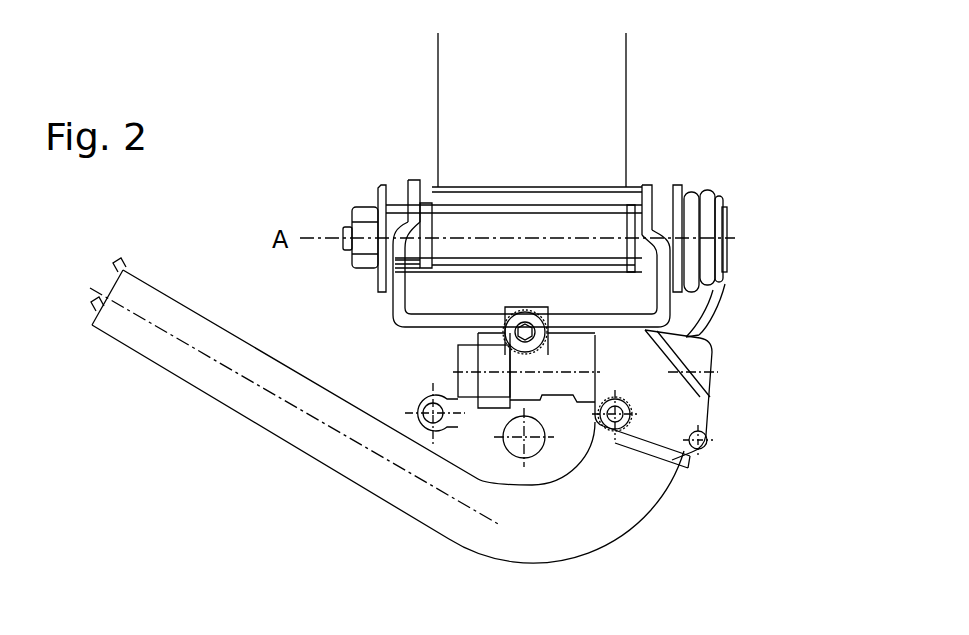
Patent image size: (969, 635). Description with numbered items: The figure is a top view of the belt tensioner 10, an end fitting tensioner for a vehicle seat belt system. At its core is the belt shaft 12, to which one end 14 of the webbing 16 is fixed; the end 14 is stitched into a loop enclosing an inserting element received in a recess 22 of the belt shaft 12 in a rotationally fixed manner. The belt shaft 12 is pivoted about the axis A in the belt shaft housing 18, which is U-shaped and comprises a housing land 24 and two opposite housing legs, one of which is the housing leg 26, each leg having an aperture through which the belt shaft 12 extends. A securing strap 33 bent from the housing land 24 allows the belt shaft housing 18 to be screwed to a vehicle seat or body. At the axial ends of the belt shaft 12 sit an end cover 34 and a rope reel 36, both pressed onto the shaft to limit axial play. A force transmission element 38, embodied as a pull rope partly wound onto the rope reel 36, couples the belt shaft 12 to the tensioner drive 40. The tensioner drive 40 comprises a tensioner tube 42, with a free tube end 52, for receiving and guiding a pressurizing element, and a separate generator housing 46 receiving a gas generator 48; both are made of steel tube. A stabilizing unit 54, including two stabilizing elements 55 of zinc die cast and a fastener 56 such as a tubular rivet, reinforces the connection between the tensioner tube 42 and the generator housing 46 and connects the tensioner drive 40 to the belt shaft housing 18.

The belt tensioner 10 is at (233, 510).
The belt shaft 12 is at (670, 220).
The end of the webbing 14 is at (426, 178).
The webbing 16 is at (587, 98).
The belt shaft housing 18 is at (672, 319).
The recess 22 is at (632, 188).
The housing land 24 is at (443, 324).
The housing leg 26 is at (393, 272).
The securing strap 33 is at (539, 468).
The end cover 34 is at (355, 212).
The rope reel 36 is at (735, 216).
The force transmission element 38 is at (707, 312).
The tensioner drive 40 is at (673, 510).
The tensioner tube 42 is at (238, 398).
The generator housing 46 is at (497, 397).
The gas generator 48 is at (468, 380).
The free tube end 52 is at (95, 280).
The stabilizing unit 54 is at (667, 410).
The stabilizing elements 55 is at (642, 401).
The fastener 56 is at (615, 422).